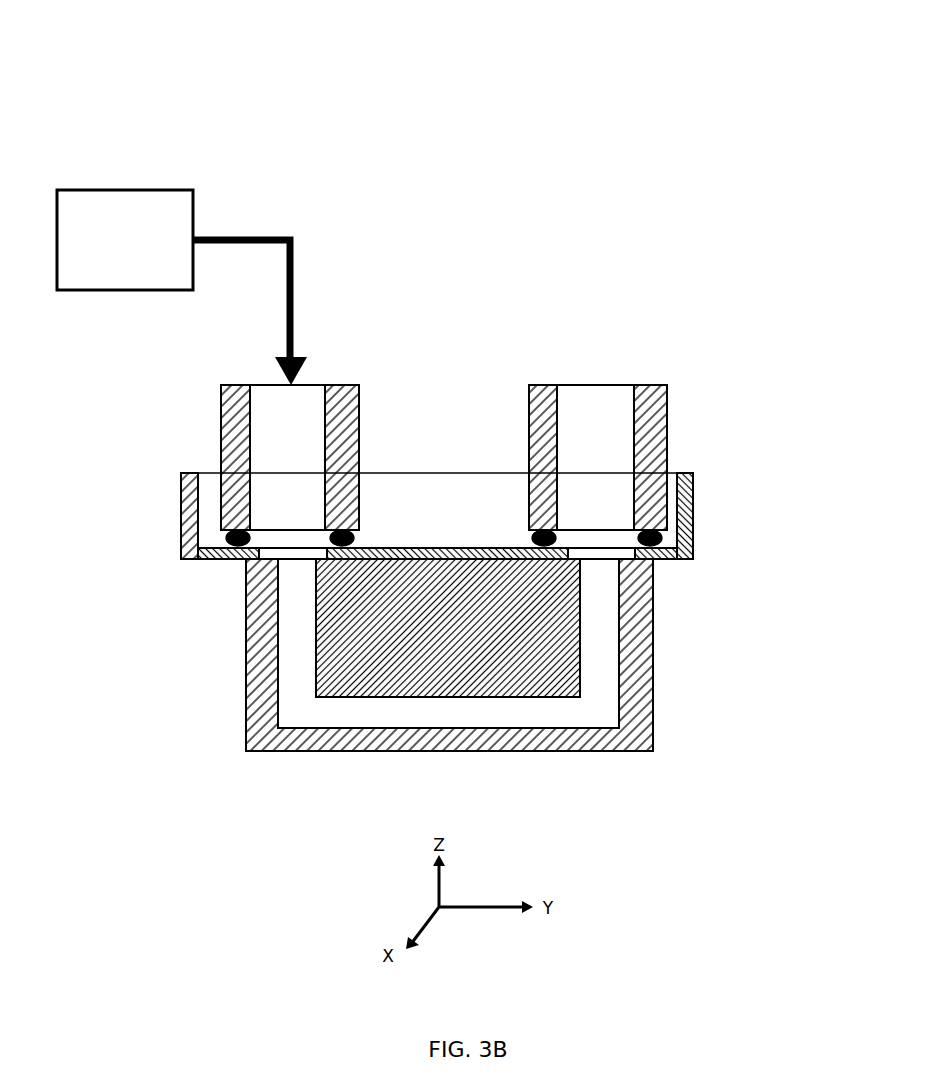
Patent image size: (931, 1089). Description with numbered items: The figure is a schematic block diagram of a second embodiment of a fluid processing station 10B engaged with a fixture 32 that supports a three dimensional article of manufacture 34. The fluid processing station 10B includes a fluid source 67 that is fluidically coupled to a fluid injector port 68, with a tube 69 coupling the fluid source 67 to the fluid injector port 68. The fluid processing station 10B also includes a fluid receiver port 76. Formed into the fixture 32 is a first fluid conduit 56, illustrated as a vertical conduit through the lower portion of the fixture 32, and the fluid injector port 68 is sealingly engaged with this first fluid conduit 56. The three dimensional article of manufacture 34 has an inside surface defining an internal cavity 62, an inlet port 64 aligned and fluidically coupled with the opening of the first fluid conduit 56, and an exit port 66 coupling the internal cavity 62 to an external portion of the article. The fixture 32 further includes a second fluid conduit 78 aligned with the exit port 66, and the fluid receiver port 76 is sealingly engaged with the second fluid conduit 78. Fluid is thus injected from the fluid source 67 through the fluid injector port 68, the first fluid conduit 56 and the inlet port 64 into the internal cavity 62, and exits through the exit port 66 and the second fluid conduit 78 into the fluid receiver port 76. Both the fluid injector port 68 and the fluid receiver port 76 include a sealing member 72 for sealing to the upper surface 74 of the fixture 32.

The fluid processing station 10B is at (497, 80).
The fluid source 67 is at (197, 210).
The tube 69 is at (297, 308).
The fluid injector port 68 is at (222, 387).
The fluid receiver port 76 is at (540, 393).
The fixture 32 is at (692, 487).
The upper surface of the fixture 74 is at (408, 547).
The first fluid conduit 56 is at (293, 545).
The second fluid conduit 78 is at (603, 550).
The sealing member 72 is at (230, 537).
The three dimensional article of manufacture 34 is at (257, 692).
The internal cavity 62 is at (410, 723).
The inlet port 64 is at (298, 573).
The exit port 66 is at (603, 568).